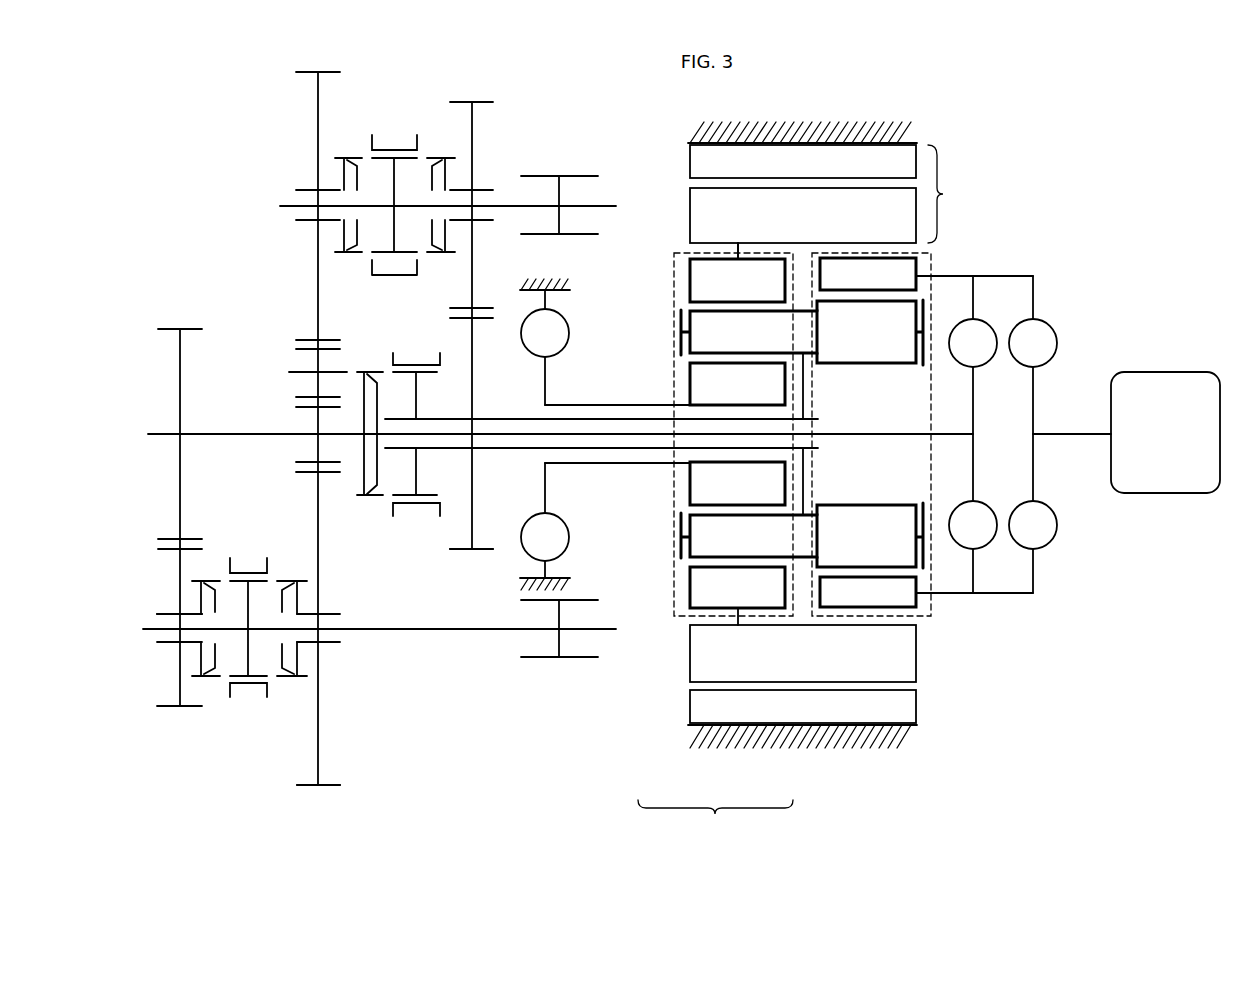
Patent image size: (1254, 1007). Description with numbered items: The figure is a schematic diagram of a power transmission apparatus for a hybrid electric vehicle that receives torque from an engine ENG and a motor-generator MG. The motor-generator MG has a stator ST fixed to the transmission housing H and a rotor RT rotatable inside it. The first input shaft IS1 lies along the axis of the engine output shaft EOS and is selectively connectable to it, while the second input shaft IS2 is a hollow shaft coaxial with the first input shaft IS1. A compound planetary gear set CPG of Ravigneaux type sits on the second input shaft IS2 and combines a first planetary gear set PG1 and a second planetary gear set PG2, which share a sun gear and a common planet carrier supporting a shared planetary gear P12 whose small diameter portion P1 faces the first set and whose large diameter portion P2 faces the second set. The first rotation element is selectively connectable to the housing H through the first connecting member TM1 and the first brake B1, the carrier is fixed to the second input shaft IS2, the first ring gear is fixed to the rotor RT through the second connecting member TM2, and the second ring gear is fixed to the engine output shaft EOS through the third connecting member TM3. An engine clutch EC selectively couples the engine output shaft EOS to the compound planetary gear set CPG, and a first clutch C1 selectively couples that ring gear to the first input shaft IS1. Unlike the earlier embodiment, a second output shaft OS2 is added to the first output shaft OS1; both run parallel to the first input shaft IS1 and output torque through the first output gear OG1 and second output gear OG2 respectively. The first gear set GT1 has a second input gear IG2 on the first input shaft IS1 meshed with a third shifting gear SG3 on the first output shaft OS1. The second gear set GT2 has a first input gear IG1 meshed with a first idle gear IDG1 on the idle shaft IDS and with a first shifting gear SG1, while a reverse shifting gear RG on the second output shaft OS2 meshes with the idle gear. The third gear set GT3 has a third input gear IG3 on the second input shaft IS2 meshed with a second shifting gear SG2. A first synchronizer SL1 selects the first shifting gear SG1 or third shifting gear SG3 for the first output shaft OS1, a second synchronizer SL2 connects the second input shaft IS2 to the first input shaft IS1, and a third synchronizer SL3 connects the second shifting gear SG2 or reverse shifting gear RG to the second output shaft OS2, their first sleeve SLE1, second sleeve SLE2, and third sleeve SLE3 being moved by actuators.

The first input shaft IS1 is at (890, 436).
The second input shaft IS2 is at (505, 451).
The first output shaft OS1 is at (425, 632).
The second output shaft OS2 is at (605, 205).
The idle shaft IDS is at (292, 372).
The reverse shifting gear RG is at (317, 125).
The first shifting gear SG1 is at (321, 720).
The second shifting gear SG2 is at (474, 138).
The third shifting gear SG3 is at (178, 666).
The first input gear IG1 is at (317, 447).
The second input gear IG2 is at (178, 476).
The third input gear IG3 is at (474, 386).
The first idle gear IDG1 is at (318, 362).
The first output gear OG1 is at (575, 658).
The second output gear OG2 is at (573, 175).
The first synchronizer SL1 is at (262, 701).
The second synchronizer SL2 is at (425, 521).
The third synchronizer SL3 is at (405, 132).
The first sleeve SLE1 is at (237, 697).
The second sleeve SLE2 is at (407, 506).
The third sleeve SLE3 is at (387, 148).
The first gear set GT1 is at (179, 710).
The second gear set GT2 is at (319, 790).
The third gear set GT3 is at (472, 556).
The first brake B1 is at (545, 434).
The first clutch C1 is at (973, 434).
The engine clutch EC is at (1033, 434).
The transmission housing H is at (543, 285).
The motor-generator MG is at (951, 194).
The stator ST is at (803, 434).
The rotor RT is at (803, 435).
The first connecting member TM1 is at (615, 401).
The second connecting member TM2 is at (737, 258).
The third connecting member TM3 is at (1013, 275).
The first planetary gear set PG1 is at (672, 556).
The second planetary gear set PG2 is at (845, 618).
The compound planetary gear set CPG is at (715, 820).
The small diameter portion P1 is at (749, 434).
The large diameter portion P2 is at (870, 434).
The shared planetary gear P12 is at (803, 332).
The engine output shaft EOS is at (1081, 435).
The engine ENG is at (1165, 432).